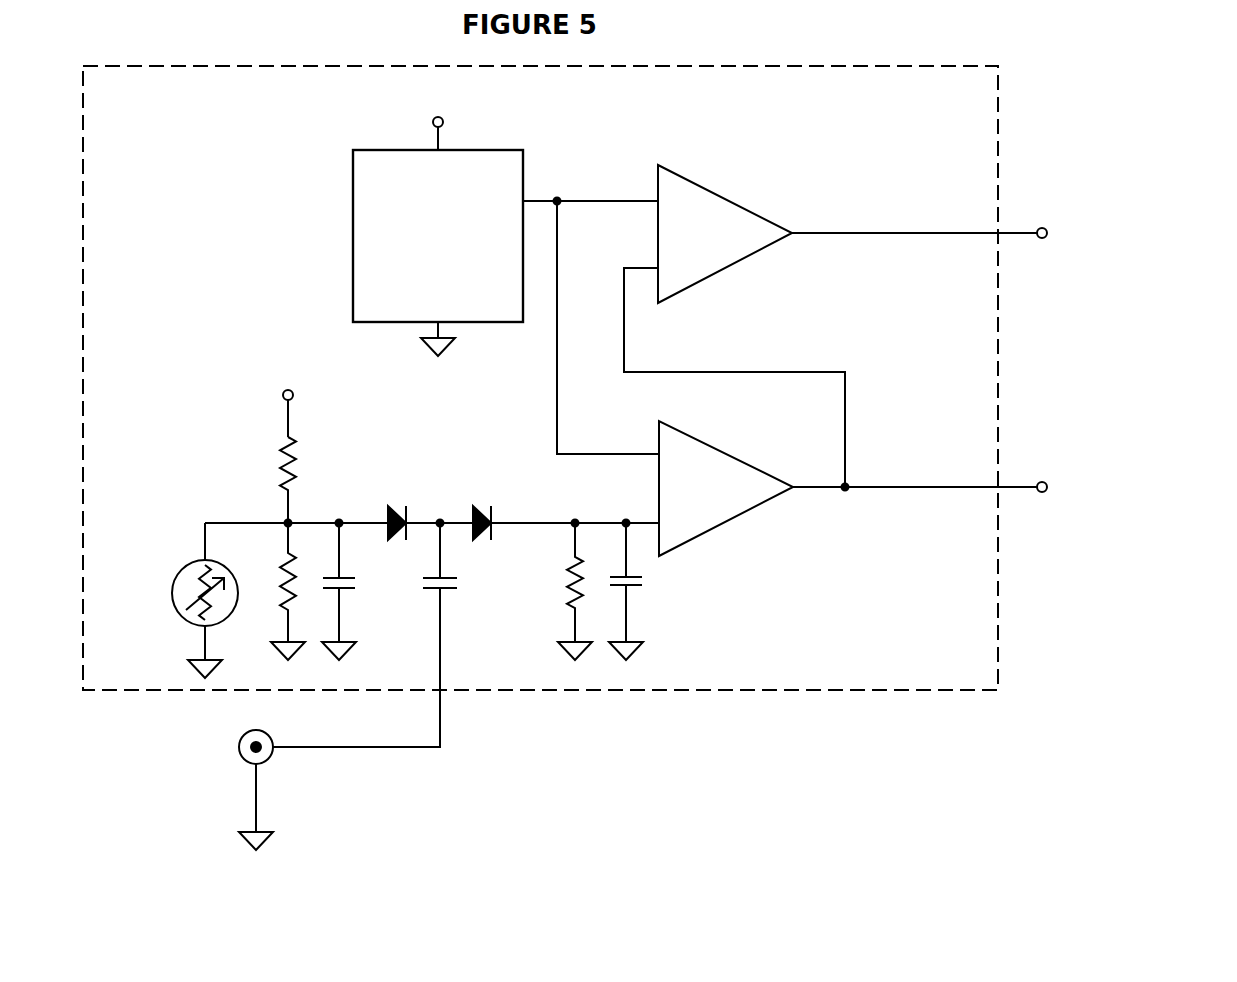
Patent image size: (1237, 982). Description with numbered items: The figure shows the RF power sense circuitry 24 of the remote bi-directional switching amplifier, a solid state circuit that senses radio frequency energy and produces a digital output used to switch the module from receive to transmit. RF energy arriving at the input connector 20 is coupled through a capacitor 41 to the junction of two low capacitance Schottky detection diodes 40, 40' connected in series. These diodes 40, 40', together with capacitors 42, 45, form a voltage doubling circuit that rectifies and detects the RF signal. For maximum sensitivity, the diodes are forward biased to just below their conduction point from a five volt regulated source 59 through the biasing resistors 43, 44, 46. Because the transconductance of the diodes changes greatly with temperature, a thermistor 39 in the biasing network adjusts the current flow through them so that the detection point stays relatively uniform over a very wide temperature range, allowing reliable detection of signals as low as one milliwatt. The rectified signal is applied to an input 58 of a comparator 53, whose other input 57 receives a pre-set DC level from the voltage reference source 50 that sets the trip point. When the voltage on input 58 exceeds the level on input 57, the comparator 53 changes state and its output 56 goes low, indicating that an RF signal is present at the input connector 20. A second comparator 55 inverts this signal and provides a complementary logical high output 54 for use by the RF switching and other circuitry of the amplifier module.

The input connector 20 is at (237, 760).
The RF power sense circuitry 24 is at (1002, 647).
The thermistor 39 is at (165, 563).
The detection diode 40 is at (419, 498).
The detection diode 40' is at (506, 498).
The capacitor 41 is at (455, 595).
The capacitor 42 is at (356, 590).
The biasing resistor 43 is at (277, 462).
The biasing resistor 44 is at (280, 586).
The capacitor 45 is at (642, 592).
The biasing resistor 46 is at (568, 578).
The voltage reference source 50 is at (352, 235).
The comparator 53 is at (752, 455).
The output 54 is at (922, 228).
The second comparator 55 is at (745, 195).
The output 56 is at (918, 480).
The input 57 is at (656, 449).
The input 58 is at (657, 518).
The 5 volt regulated source 59 is at (278, 392).